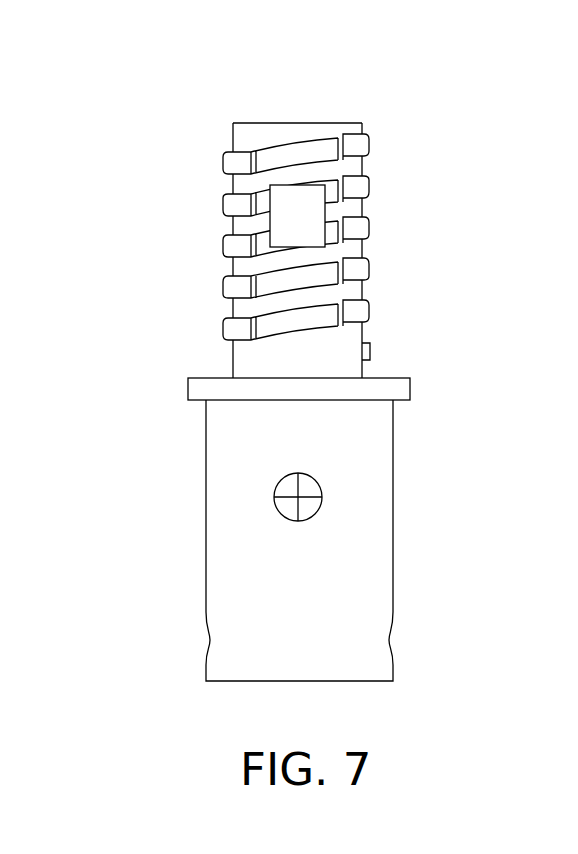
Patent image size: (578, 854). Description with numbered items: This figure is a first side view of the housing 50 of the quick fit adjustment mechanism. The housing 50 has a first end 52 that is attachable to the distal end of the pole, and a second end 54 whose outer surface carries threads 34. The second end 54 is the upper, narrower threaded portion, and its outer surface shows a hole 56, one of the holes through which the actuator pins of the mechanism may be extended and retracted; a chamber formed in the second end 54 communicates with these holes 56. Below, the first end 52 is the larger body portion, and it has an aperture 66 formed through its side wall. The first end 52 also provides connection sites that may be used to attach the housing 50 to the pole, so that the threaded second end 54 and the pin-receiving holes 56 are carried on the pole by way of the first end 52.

The housing 50 is at (438, 108).
The second end 54 is at (430, 197).
The threads 34 is at (325, 277).
The holes 56 is at (290, 223).
The first end 52 is at (437, 498).
The aperture 66 is at (300, 496).